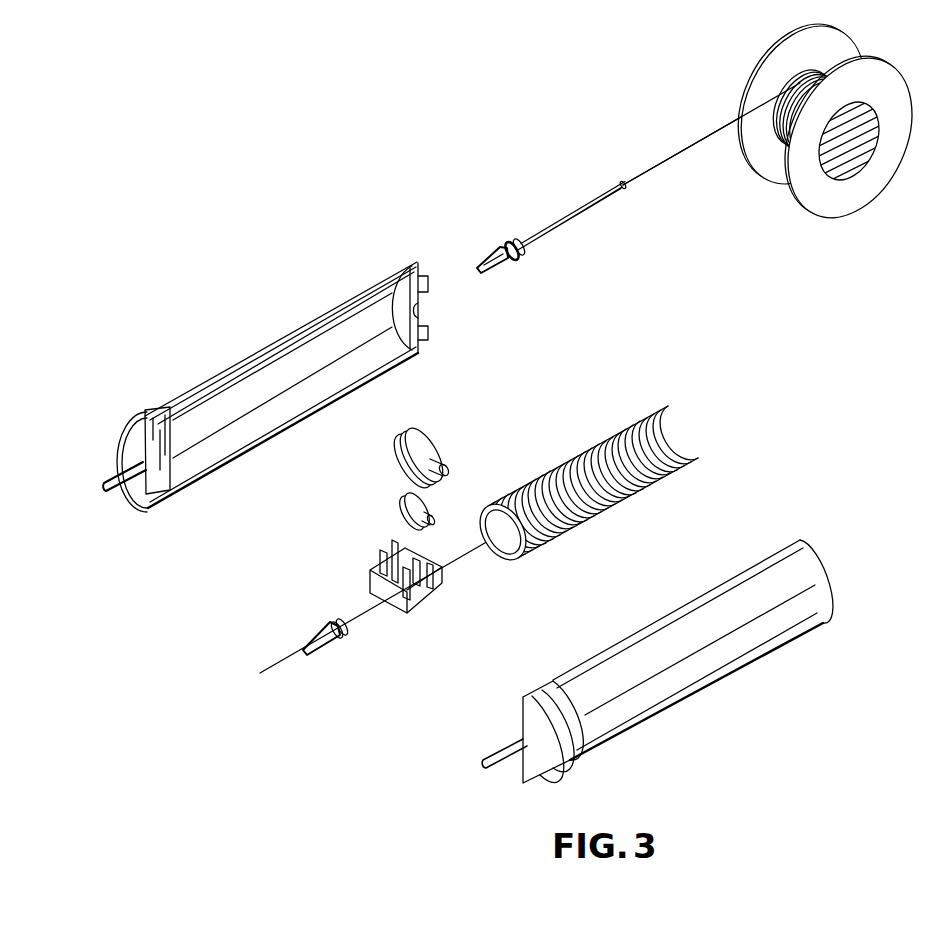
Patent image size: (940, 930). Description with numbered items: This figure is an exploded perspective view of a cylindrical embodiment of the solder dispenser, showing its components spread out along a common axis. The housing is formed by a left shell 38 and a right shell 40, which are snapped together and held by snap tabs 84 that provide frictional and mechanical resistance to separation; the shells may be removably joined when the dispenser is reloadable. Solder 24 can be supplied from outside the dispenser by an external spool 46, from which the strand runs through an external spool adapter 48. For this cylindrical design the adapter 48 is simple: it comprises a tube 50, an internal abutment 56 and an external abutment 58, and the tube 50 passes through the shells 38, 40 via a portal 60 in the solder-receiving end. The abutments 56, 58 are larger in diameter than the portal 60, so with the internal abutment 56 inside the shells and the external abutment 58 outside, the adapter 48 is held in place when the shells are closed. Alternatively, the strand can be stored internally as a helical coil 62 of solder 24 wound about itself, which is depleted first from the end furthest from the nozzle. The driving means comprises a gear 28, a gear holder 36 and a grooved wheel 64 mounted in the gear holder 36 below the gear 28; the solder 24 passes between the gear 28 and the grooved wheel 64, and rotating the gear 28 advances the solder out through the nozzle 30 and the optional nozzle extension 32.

The solder 24 is at (665, 165).
The gear 28 is at (441, 436).
The nozzle 30 is at (97, 486).
The nozzle extension 32 is at (308, 637).
The gear holder 36 is at (400, 612).
The left shell 38 is at (318, 387).
The right shell 40 is at (633, 697).
The external spool 46 is at (848, 200).
The external spool adapter 48 is at (528, 248).
The tube 50 is at (590, 212).
The internal abutment 56 is at (500, 252).
The external abutment 58 is at (514, 246).
The portal 60 is at (423, 310).
The helical coil 62 is at (586, 518).
The grooved wheel 64 is at (404, 505).
The snap tabs 84 is at (428, 280).